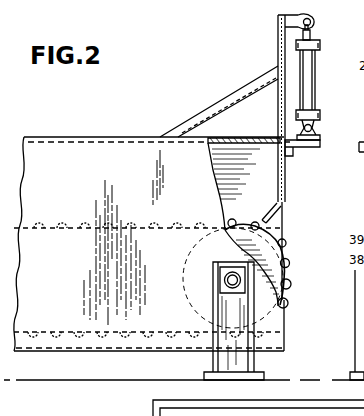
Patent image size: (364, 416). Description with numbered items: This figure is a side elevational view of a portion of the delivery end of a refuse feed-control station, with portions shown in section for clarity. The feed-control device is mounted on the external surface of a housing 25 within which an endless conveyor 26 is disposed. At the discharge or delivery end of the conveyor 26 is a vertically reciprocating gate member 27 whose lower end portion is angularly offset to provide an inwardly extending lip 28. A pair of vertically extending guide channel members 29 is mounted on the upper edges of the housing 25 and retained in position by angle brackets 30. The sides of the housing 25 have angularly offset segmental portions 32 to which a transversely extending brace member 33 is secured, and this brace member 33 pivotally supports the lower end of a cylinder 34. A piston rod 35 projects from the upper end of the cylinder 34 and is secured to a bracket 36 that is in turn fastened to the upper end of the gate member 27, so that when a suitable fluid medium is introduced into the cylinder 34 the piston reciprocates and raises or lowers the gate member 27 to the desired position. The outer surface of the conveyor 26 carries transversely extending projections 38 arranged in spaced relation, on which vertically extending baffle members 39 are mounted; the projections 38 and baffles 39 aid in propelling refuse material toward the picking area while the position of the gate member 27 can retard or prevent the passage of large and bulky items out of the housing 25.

The housing 25 is at (100, 136).
The endless conveyor 26 is at (276, 284).
The gate member 27 is at (286, 190).
The lip 28 is at (276, 216).
The guide channel members 29 is at (277, 42).
The angle brackets 30 is at (219, 101).
The segmental portions 32 is at (294, 155).
The brace member 33 is at (318, 138).
The cylinder 34 is at (318, 90).
The piston rod 35 is at (312, 36).
The bracket 36 is at (314, 14).
The projections 38 is at (287, 262).
The baffle members 39 is at (286, 243).